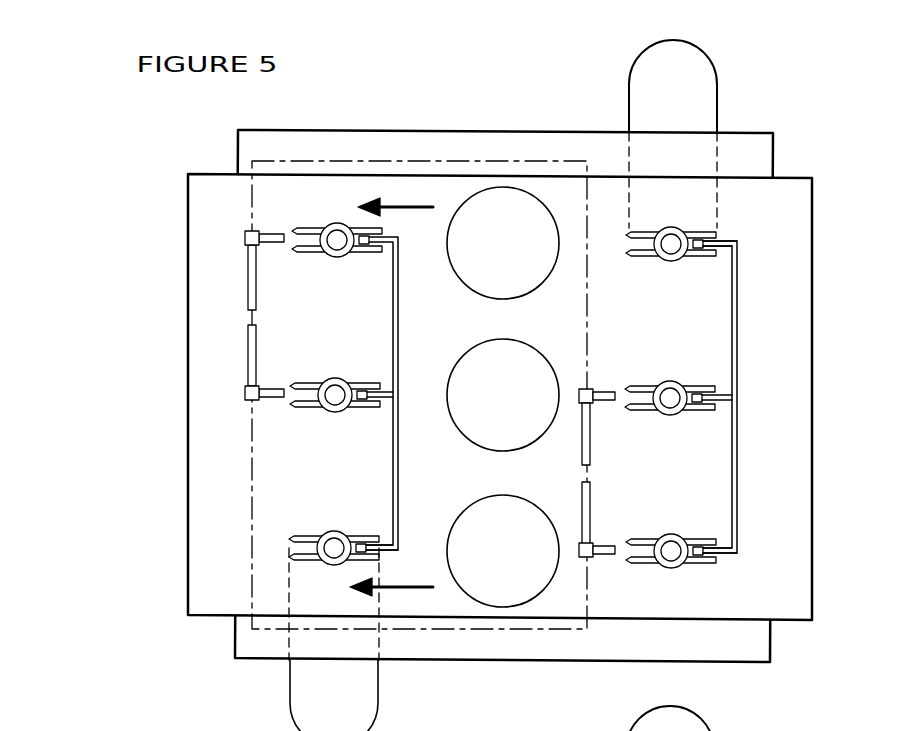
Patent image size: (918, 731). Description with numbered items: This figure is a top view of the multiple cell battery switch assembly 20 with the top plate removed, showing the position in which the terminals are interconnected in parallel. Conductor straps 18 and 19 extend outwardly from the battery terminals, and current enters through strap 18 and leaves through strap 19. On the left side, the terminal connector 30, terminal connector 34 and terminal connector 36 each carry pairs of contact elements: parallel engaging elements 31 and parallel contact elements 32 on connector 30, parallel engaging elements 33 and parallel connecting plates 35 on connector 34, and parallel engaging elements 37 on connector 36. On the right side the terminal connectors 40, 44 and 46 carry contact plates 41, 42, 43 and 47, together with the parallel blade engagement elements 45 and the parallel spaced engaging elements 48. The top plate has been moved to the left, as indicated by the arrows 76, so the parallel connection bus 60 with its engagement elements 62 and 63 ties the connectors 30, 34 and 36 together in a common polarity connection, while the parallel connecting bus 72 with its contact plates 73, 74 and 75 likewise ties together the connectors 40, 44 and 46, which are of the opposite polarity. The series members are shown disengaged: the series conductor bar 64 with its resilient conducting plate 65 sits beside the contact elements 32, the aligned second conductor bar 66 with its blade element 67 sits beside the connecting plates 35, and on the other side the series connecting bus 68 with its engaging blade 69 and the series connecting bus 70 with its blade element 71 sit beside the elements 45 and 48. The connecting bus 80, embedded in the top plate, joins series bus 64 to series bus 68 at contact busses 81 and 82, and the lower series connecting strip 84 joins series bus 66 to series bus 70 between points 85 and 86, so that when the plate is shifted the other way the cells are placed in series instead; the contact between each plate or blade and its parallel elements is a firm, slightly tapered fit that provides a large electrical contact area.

The conductor strap 18 is at (292, 718).
The conductor strap 19 is at (629, 82).
The circuit board under test 20 is at (130, 161).
The terminal connector 30 is at (328, 226).
The parallel engaging elements 31 is at (355, 254).
The parallel contact elements 32 is at (313, 254).
The parallel engaging elements 33 is at (348, 382).
The terminal connector 34 is at (338, 415).
The parallel connecting plates 35 is at (300, 382).
The terminal connector 36 is at (327, 530).
The parallel engaging elements 37 is at (350, 563).
The terminal connector 40 is at (664, 228).
The terminal contact 41 is at (700, 232).
The terminal contact 42 is at (632, 252).
The terminal contact 43 is at (700, 385).
The terminal connector 44 is at (672, 380).
The parallel blade engagement elements 45 is at (633, 385).
The terminal connector 46 is at (666, 533).
The terminal contact 47 is at (700, 535).
The parallel spaced engaging elements 48 is at (635, 535).
The parallel connection bus 60 is at (399, 308).
The engagement element 62 is at (390, 392).
The engagement element 63 is at (384, 545).
The series conductor bar 64 is at (247, 272).
The conducting plate 65 is at (270, 246).
The second conductor bar 66 is at (247, 360).
The blade element 67 is at (272, 398).
The series connecting bus 68 is at (591, 432).
The engaging blade 69 is at (600, 391).
The series connecting bus 70 is at (582, 487).
The blade element 71 is at (600, 556).
The parallel connecting bus 72 is at (738, 370).
The conductor branch 73 is at (735, 241).
The conductor branch 74 is at (722, 402).
The conductor branch 75 is at (737, 556).
The direction arrow 76 is at (411, 210).
The connecting bus 80 is at (397, 160).
The contact bus 81 is at (247, 232).
The contact bus 82 is at (582, 388).
The series connecting strip 84 is at (425, 630).
The connection point 85 is at (245, 400).
The connection point 86 is at (581, 542).